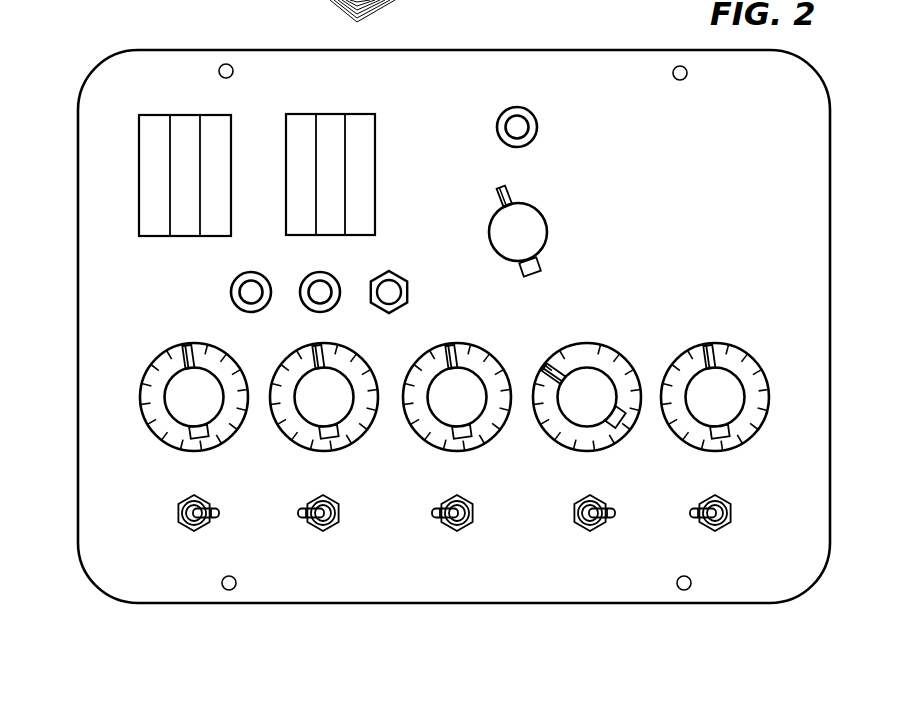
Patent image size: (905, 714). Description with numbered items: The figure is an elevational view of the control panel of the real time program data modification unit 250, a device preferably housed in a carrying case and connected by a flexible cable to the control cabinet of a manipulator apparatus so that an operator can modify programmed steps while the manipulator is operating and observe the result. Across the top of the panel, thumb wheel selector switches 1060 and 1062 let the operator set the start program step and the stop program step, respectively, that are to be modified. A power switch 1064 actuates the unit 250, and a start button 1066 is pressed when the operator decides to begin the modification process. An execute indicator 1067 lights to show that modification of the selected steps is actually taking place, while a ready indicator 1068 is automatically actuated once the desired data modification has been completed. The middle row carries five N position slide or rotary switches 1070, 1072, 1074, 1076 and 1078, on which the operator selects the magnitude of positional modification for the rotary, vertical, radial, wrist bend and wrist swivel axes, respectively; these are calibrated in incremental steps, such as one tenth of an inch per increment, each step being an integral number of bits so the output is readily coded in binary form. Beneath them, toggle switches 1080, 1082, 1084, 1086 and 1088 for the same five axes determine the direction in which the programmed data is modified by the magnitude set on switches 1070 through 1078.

The real time program data modification unit 250 is at (567, 50).
The thumb wheel selector switch 1060 is at (139, 130).
The thumb wheel selector switch 1062 is at (286, 145).
The power switch 1064 is at (548, 230).
The start button 1066 is at (392, 272).
The execute indicator 1067 is at (302, 284).
The ready indicator 1068 is at (231, 292).
The positional modification switch 1070 is at (153, 432).
The positional modification switch 1072 is at (298, 442).
The positional modification switch 1074 is at (422, 442).
The positional modification switch 1076 is at (550, 440).
The positional modification switch 1078 is at (682, 440).
The toggle switch 1080 is at (208, 508).
The toggle switch 1082 is at (312, 508).
The toggle switch 1084 is at (444, 508).
The toggle switch 1086 is at (600, 508).
The toggle switch 1088 is at (704, 508).